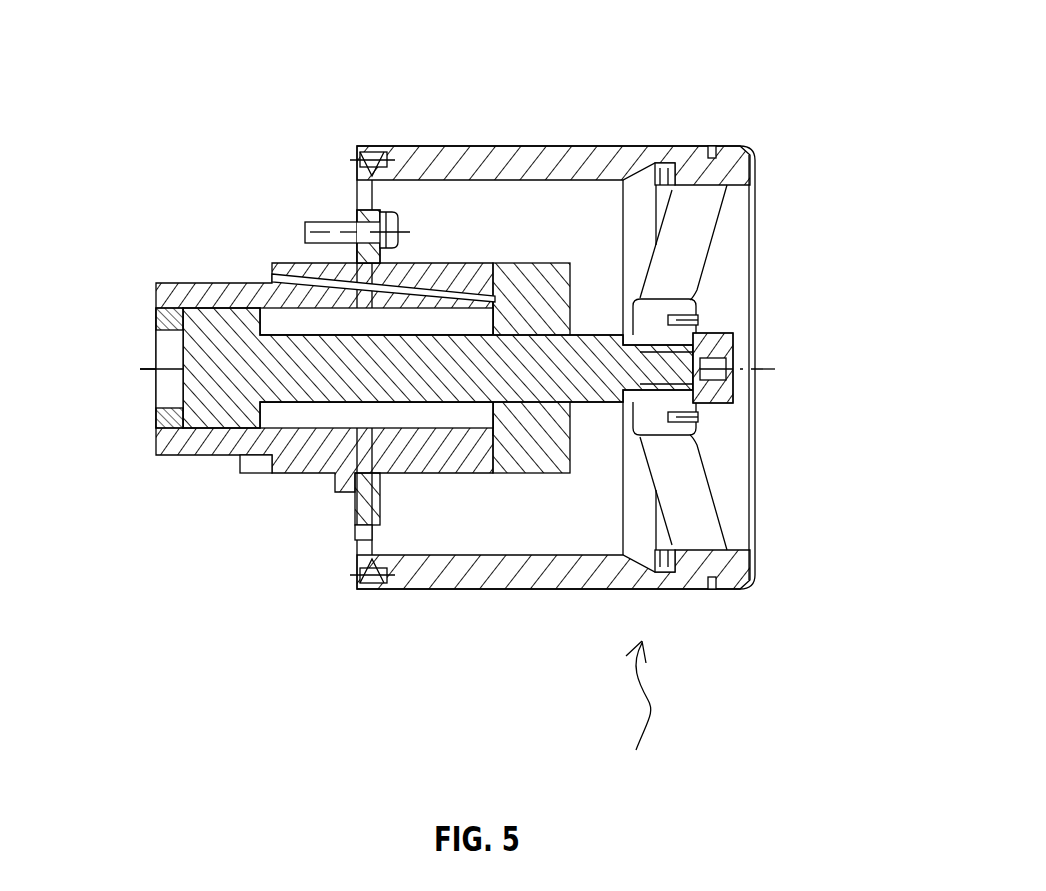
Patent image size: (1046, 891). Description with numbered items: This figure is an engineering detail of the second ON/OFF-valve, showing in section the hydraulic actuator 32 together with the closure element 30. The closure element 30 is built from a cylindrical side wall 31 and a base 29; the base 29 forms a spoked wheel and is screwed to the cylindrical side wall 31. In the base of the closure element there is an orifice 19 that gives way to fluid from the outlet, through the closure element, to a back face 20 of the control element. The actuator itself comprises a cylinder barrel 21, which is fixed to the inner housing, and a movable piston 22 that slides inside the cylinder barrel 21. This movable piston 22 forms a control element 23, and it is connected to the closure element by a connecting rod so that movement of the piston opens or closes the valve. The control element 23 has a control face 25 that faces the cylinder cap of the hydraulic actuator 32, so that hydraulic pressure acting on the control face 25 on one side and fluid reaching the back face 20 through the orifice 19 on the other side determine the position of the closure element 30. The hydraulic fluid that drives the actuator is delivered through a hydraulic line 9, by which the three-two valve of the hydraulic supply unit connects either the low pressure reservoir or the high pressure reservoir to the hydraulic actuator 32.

The hydraulic line 9 is at (300, 266).
The orifice 19 is at (700, 510).
The back face 20 is at (185, 346).
The cylinder barrel 21 is at (222, 290).
The movable piston 22 is at (195, 392).
The control element 23 is at (126, 381).
The control face 25 is at (257, 402).
The base 29 is at (747, 381).
The closure element 30 is at (518, 158).
The cylindrical side wall 31 is at (552, 321).
The hydraulic actuator 32 is at (638, 721).